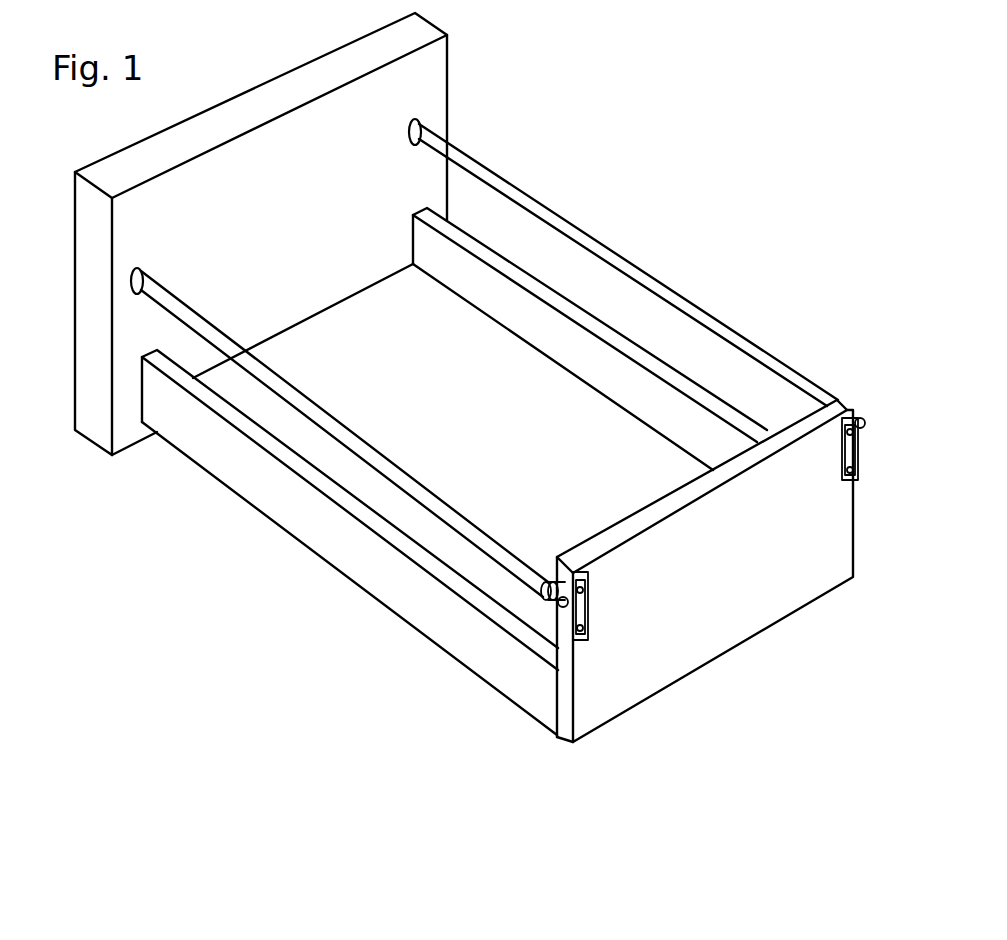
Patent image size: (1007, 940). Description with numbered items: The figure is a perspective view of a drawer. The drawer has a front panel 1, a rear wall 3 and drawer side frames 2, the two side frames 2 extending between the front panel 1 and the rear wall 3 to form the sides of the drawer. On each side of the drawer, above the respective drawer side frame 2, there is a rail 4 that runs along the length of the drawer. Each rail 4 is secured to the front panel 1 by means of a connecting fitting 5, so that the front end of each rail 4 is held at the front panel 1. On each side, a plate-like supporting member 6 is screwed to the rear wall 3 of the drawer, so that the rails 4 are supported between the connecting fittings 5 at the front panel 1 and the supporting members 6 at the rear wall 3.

The front panel 1 is at (418, 76).
The drawer side frames 2 is at (546, 291).
The rear wall 3 is at (806, 542).
The rail 4 is at (570, 227).
The connecting fitting 5 is at (418, 120).
The supporting member 6 is at (572, 620).